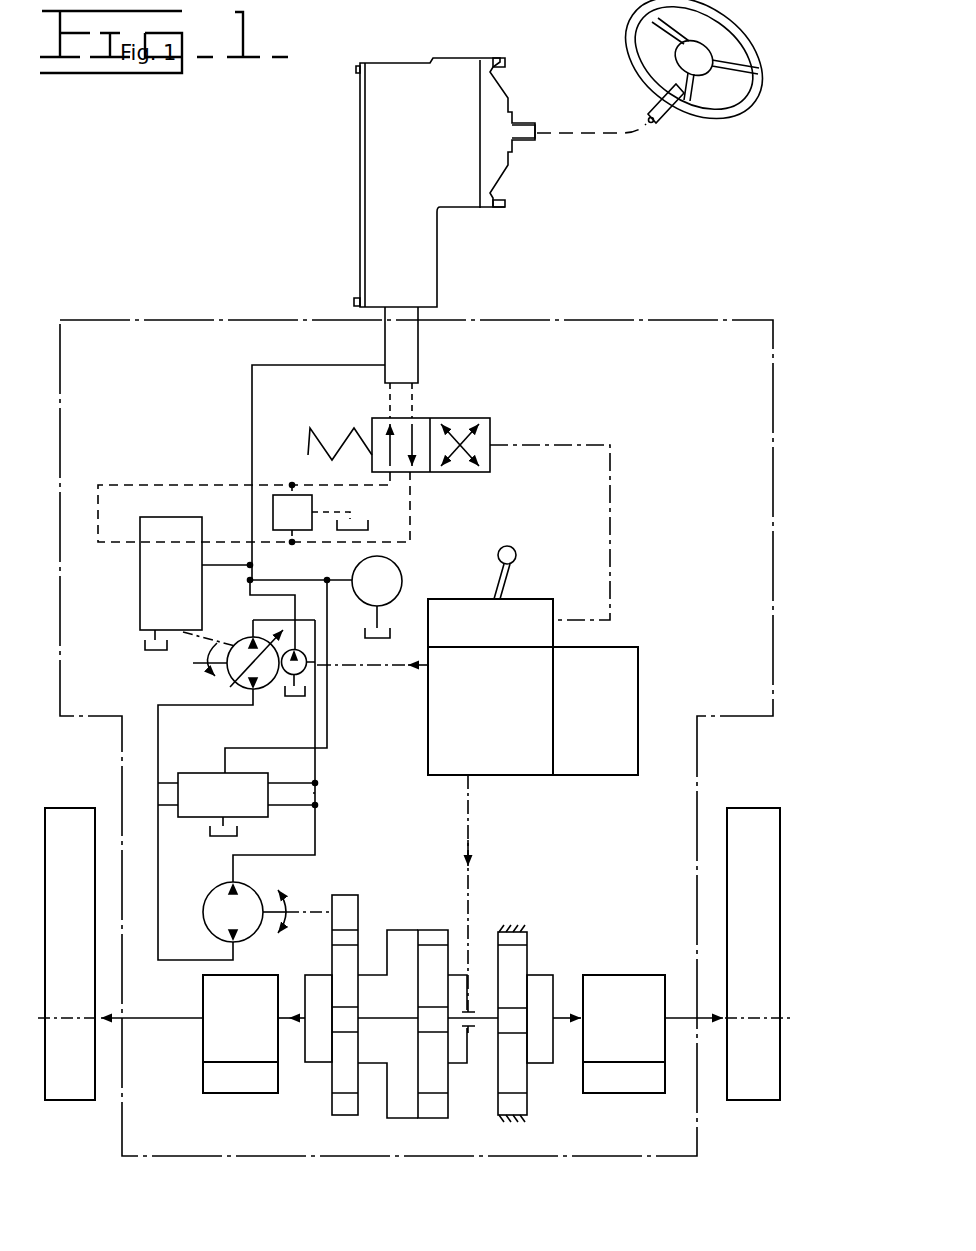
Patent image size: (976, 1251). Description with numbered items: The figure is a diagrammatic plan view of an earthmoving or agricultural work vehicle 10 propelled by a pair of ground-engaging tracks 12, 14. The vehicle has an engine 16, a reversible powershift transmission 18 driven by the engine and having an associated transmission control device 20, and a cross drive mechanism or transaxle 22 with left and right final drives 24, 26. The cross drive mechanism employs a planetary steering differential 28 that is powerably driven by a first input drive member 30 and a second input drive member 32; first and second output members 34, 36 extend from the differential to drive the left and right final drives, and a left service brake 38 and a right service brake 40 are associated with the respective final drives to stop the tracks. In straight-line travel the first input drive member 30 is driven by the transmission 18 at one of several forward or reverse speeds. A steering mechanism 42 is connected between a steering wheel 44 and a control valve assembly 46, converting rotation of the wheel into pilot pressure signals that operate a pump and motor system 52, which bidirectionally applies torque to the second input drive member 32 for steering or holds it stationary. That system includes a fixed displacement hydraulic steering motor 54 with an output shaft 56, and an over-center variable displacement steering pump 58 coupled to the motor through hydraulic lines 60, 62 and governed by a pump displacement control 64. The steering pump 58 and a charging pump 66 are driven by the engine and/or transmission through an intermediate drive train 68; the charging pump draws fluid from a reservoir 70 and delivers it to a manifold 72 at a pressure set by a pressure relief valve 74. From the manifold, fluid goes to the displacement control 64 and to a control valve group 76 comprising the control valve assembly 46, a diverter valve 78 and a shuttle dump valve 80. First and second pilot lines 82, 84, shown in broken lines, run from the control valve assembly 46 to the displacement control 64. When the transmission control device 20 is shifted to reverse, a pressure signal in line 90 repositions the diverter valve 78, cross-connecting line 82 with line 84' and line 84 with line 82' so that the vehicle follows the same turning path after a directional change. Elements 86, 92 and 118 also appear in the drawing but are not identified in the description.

The work vehicle 10 is at (634, 318).
The ground-engaging track 12 is at (69, 954).
The ground-engaging track 14 is at (758, 954).
The engine 16 is at (595, 711).
The reversible powershift transmission 18 is at (490, 711).
The transmission control device 20 is at (490, 596).
The cross drive mechanism 22 is at (171, 1061).
The left final drive 24 is at (240, 1018).
The right final drive 26 is at (653, 1018).
The planetary steering differential 28 is at (420, 962).
The first input drive member 30 is at (470, 918).
The second input drive member 32 is at (353, 911).
The first output member 34 is at (297, 1012).
The second output member 36 is at (563, 1013).
The left service brake 38 is at (240, 1077).
The right service brake 40 is at (624, 1077).
The steering mechanism 42 is at (407, 60).
The steering input control member 44 is at (630, 36).
The control valve assembly 46 is at (382, 341).
The pump and motor system 52 is at (318, 793).
The hydraulic steering motor 54 is at (216, 899).
The output shaft 56 is at (310, 903).
The variable displacement hydraulic steering pump 58 is at (229, 679).
The hydraulic line 60 is at (158, 854).
The hydraulic line 62 is at (317, 833).
The pump displacement control 64 is at (171, 573).
The charging pump 66 is at (309, 660).
The intermediate drive train 68 is at (421, 673).
The reservoir 70 is at (369, 521).
The distribution conduit 72 is at (263, 596).
The pressure relief valve 74 is at (326, 592).
The control valve group 76 is at (356, 456).
The diverter valve 78 is at (483, 431).
The shuttle dump valve 80 is at (311, 514).
The first pilot line 82 is at (354, 400).
The line 82' is at (244, 495).
The second pilot line 84 is at (451, 400).
The line 84' is at (385, 507).
The relief valve 86 is at (331, 609).
The line 90 is at (613, 468).
The steering gear shaft 92 is at (530, 141).
The valve 118 is at (223, 795).